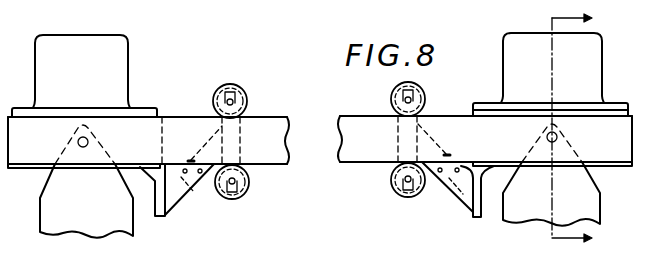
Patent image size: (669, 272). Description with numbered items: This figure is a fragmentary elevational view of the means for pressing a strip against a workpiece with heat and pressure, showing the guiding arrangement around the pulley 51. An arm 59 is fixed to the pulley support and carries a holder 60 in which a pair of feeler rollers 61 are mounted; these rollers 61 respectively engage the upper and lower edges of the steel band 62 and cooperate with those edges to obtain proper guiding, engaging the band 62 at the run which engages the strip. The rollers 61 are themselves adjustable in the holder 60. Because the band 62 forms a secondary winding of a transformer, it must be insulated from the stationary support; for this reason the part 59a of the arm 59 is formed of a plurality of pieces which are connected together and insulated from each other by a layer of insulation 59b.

The pulley 51 is at (118, 83).
The arm 59 is at (162, 216).
The part of the arm 59a is at (178, 199).
The layer of insulation 59b is at (190, 161).
The holder 60 is at (233, 130).
The feeler rollers 61 is at (232, 92).
The steel band 62 is at (362, 121).